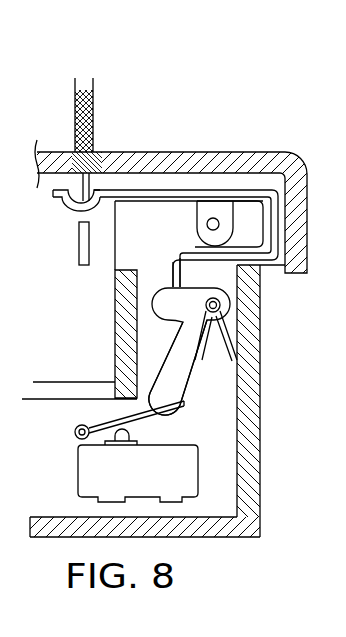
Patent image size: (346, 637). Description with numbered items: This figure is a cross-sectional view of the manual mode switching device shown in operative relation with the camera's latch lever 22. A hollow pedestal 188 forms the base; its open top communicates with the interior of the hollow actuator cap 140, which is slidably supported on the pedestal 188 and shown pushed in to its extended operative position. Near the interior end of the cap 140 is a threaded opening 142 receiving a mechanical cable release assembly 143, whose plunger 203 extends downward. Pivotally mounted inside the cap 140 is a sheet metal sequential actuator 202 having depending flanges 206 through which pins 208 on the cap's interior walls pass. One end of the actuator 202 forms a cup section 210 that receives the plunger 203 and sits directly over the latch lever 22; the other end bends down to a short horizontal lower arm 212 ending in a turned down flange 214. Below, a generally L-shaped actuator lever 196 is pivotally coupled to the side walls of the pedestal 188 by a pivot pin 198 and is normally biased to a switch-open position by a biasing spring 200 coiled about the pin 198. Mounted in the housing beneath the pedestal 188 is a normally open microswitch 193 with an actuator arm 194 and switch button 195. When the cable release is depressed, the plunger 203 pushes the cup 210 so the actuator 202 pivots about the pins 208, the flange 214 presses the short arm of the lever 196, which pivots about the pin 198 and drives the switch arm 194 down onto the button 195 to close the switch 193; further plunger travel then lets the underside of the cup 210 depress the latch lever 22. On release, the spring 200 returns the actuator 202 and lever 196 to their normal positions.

The actuator cap 140 is at (246, 152).
The threaded opening 142 is at (100, 158).
The cable release assembly 143 is at (95, 100).
The pedestal 188 is at (257, 350).
The microswitch 193 is at (196, 476).
The actuator arm 194 is at (127, 413).
The switch button 195 is at (130, 438).
The actuator lever 196 is at (188, 372).
The pivot pin 198 is at (221, 304).
The biasing spring 200 is at (237, 330).
The sequential actuator 202 is at (150, 208).
The mechanical plunger end 203 is at (85, 192).
The depending flanges 206 is at (207, 210).
The pins 208 is at (207, 226).
The cup section 210 is at (80, 208).
The lower arm 212 is at (197, 273).
The turned down flange 214 is at (189, 351).
The latch lever 22 is at (77, 247).